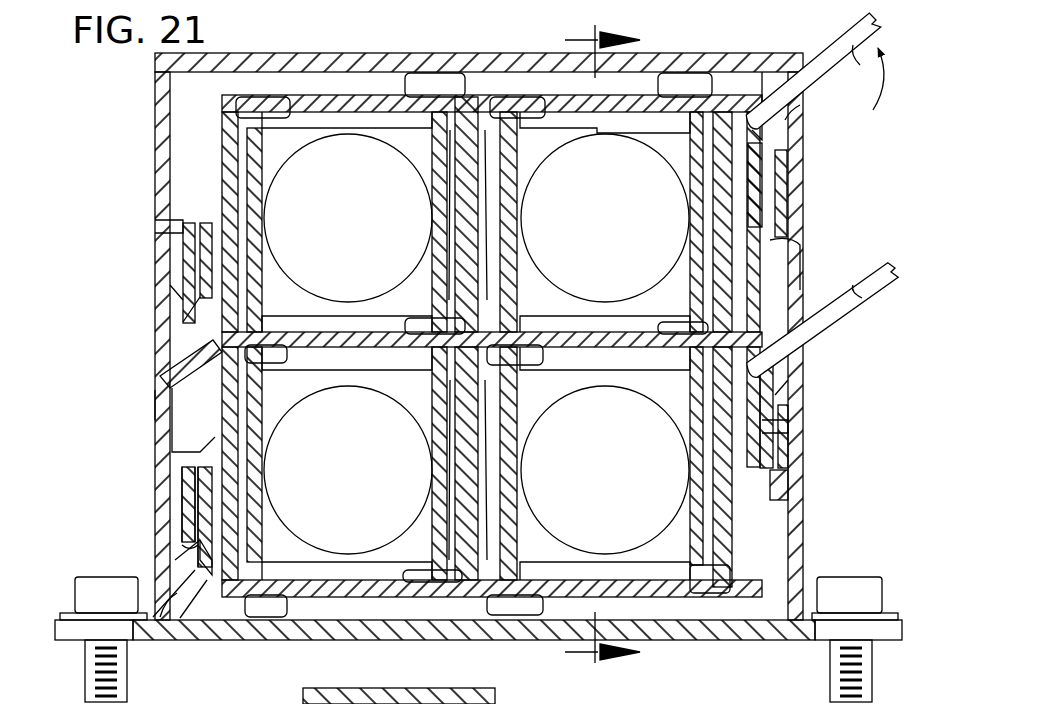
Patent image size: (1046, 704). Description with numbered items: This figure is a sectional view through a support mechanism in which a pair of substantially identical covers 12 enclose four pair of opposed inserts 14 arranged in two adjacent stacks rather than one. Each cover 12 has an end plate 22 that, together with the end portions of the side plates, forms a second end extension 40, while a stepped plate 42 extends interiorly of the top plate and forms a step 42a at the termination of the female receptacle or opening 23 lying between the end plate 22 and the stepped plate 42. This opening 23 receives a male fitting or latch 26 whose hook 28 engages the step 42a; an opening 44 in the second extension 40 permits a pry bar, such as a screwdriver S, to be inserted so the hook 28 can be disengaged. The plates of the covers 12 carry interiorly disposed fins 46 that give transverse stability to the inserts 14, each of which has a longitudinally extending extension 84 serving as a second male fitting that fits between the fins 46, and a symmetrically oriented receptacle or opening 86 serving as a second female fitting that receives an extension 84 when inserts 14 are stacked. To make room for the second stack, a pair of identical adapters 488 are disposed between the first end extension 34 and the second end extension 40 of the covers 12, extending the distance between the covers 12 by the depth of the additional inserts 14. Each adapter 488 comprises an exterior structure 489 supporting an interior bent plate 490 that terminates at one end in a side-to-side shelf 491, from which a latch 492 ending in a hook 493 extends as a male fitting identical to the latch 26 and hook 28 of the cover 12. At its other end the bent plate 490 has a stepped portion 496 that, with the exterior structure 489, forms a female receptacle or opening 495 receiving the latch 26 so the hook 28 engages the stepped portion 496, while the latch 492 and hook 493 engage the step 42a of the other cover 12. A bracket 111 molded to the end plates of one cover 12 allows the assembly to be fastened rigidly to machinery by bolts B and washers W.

The cover 12 is at (387, 50).
The insert 14 is at (346, 90).
The end plate 22 is at (598, 349).
The female receptacle or opening 23 is at (200, 520).
The male fitting or latch 26 is at (185, 275).
The hook 28 is at (190, 335).
The first end extension 34 is at (155, 140).
The second end extension 40 is at (185, 470).
The stepped plate 42 is at (192, 622).
The step 42a is at (205, 545).
The opening 44 is at (170, 618).
The fin 46 is at (295, 80).
The extension 84 is at (468, 77).
The receptacle or opening 86 is at (262, 107).
The bracket 111 is at (70, 640).
The adapter 488 is at (154, 420).
The exterior structure 489 is at (158, 392).
The bent plate 490 is at (185, 352).
The shelf 491 is at (202, 452).
The latch 492 is at (195, 495).
The hook 493 is at (200, 565).
The female receptacle or opening 495 is at (170, 228).
The stepped portion 496 is at (195, 300).
The bolt B is at (90, 580).
The washer W is at (65, 614).
The screwdriver S is at (835, 43).